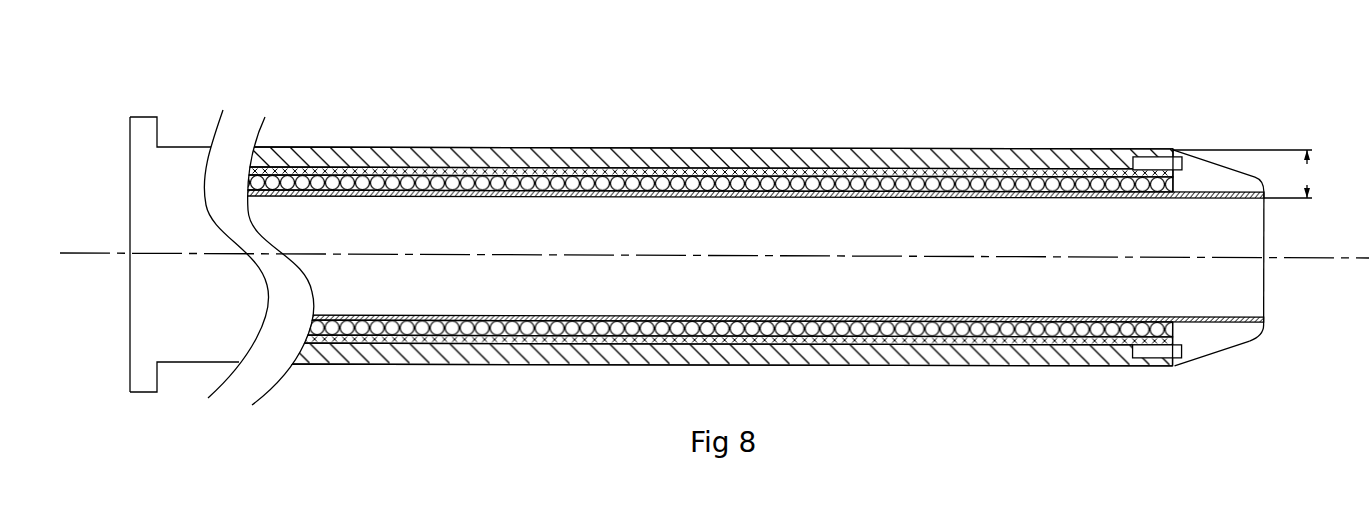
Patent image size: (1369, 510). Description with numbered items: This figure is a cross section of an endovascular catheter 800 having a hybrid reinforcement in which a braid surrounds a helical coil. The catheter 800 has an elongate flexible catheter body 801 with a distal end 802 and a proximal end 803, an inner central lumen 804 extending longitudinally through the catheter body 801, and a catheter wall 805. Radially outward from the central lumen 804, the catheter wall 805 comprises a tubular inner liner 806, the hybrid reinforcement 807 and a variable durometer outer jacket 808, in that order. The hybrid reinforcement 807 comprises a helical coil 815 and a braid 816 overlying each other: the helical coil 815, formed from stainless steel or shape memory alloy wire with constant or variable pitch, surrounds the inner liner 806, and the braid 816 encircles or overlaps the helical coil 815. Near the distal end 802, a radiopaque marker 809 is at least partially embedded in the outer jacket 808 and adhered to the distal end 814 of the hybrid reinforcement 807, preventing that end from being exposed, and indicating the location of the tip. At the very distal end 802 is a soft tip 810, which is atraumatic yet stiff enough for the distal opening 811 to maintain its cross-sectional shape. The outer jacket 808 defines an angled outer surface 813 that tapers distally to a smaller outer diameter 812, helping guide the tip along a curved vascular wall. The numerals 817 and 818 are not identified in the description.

The endovascular catheter 800 is at (1285, 110).
The catheter body 801 is at (706, 228).
The distal end 802 is at (1167, 305).
The proximal end 803 is at (178, 405).
The inner central lumen 804 is at (78, 254).
The catheter wall 805 is at (1243, 174).
The tubular inner liner 806 is at (778, 256).
The hybrid reinforcement 807 is at (706, 141).
The variable durometer outer jacket 808 is at (706, 135).
The radiopaque marker 809 is at (1133, 266).
The soft tip 810 is at (1218, 150).
The distal opening 811 is at (1315, 258).
The smaller outer diameter 812 is at (1309, 363).
The angled outer surface 813 is at (1234, 391).
The distal end of the hybrid reinforcement 814 is at (706, 375).
The helical coil 815 is at (706, 296).
The braid 816 is at (706, 387).
The bore 817 is at (714, 280).
The flange upper lip 818 is at (170, 113).